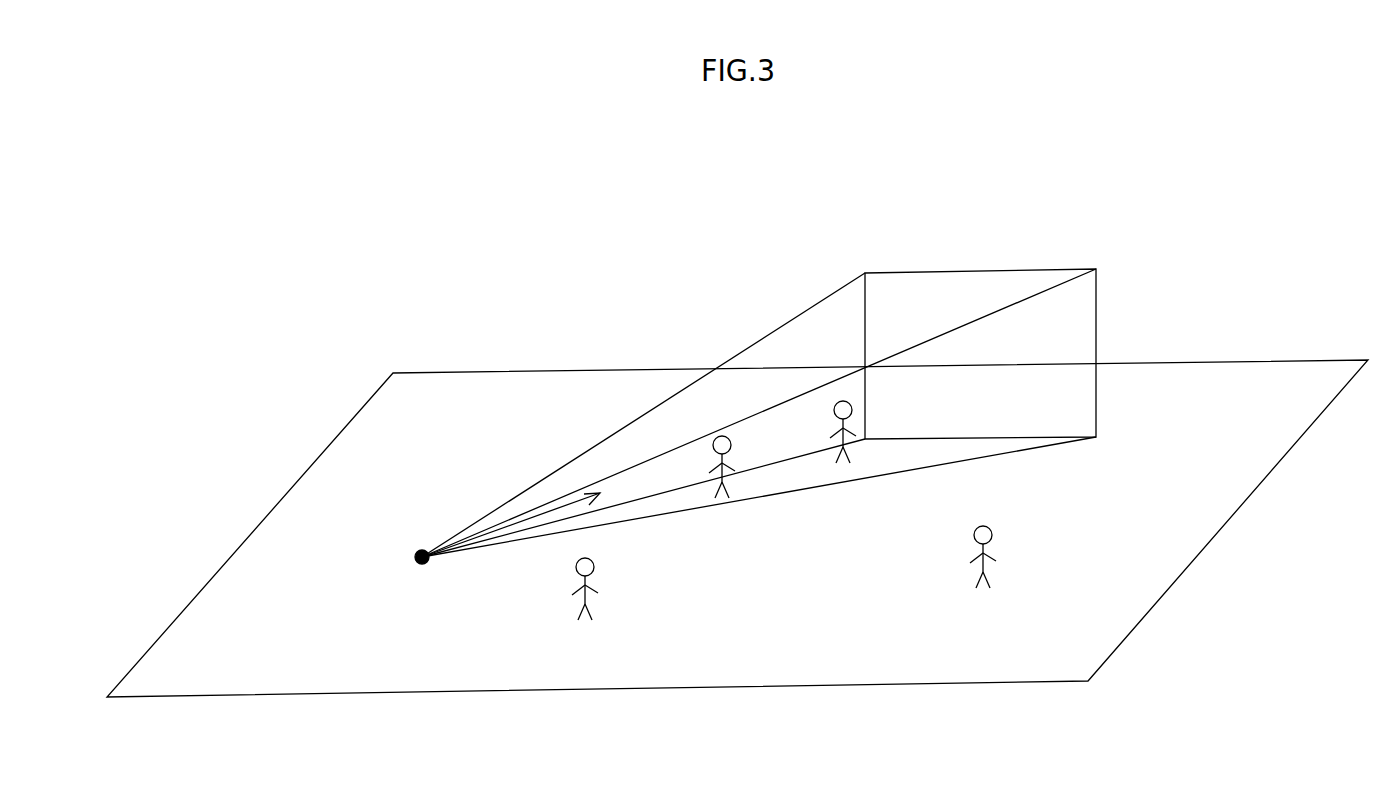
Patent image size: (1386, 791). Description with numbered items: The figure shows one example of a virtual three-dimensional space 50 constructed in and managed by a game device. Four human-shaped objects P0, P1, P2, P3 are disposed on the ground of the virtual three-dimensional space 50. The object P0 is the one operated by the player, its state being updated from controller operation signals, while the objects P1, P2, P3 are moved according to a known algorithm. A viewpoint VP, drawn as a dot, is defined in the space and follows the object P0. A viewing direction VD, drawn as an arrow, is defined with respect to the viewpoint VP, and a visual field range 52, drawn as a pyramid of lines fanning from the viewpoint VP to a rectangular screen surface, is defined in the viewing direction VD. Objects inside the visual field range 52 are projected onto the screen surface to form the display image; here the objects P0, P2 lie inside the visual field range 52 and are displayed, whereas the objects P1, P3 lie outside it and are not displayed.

The virtual three-dimensional space 50 is at (512, 288).
The visual field range 52 is at (767, 334).
The viewpoint VP is at (418, 548).
The viewing direction VD is at (531, 520).
The object P0 is at (727, 466).
The object P1 is at (988, 562).
The object P2 is at (848, 438).
The object P3 is at (590, 590).